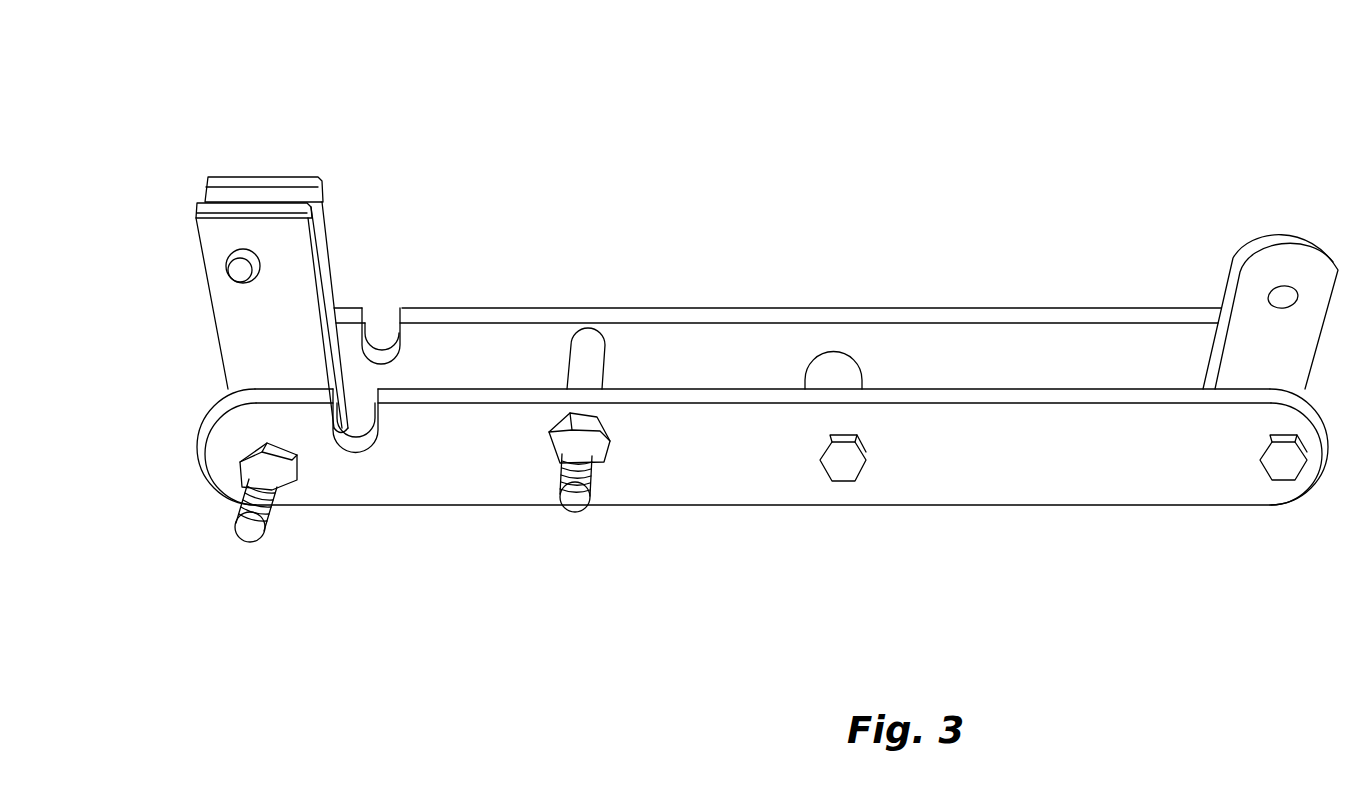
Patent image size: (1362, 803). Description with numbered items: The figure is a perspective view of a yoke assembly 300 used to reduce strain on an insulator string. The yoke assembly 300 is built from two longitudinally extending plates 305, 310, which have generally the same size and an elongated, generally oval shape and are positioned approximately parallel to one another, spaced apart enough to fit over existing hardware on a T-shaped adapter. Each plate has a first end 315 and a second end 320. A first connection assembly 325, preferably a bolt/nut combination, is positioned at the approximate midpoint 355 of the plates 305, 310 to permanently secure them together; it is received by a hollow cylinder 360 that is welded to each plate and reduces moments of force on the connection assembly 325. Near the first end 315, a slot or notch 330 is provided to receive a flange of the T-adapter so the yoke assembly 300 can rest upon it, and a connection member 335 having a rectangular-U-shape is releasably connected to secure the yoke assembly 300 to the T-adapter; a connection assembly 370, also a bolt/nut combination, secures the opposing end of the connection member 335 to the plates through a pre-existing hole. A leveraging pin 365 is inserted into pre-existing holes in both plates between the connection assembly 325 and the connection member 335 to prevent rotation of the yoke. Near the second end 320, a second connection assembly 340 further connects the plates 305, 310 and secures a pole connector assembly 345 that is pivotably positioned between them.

The yoke assembly 300 is at (531, 309).
The longitudinally extending plate 305 is at (1090, 350).
The longitudinally extending plate 310 is at (1075, 450).
The first end 315 is at (191, 457).
The second end 320 is at (1329, 460).
The first connection assembly 325 is at (842, 468).
The slot or notch 330 is at (385, 320).
The connection member 335 is at (288, 240).
The second connection assembly 340 is at (1272, 467).
The pole connector assembly 345 is at (1283, 270).
The midpoint 355 is at (800, 450).
The hollow cylinder 360 is at (833, 362).
The leveraging pin 365 is at (578, 497).
The connection assembly 370 is at (250, 532).